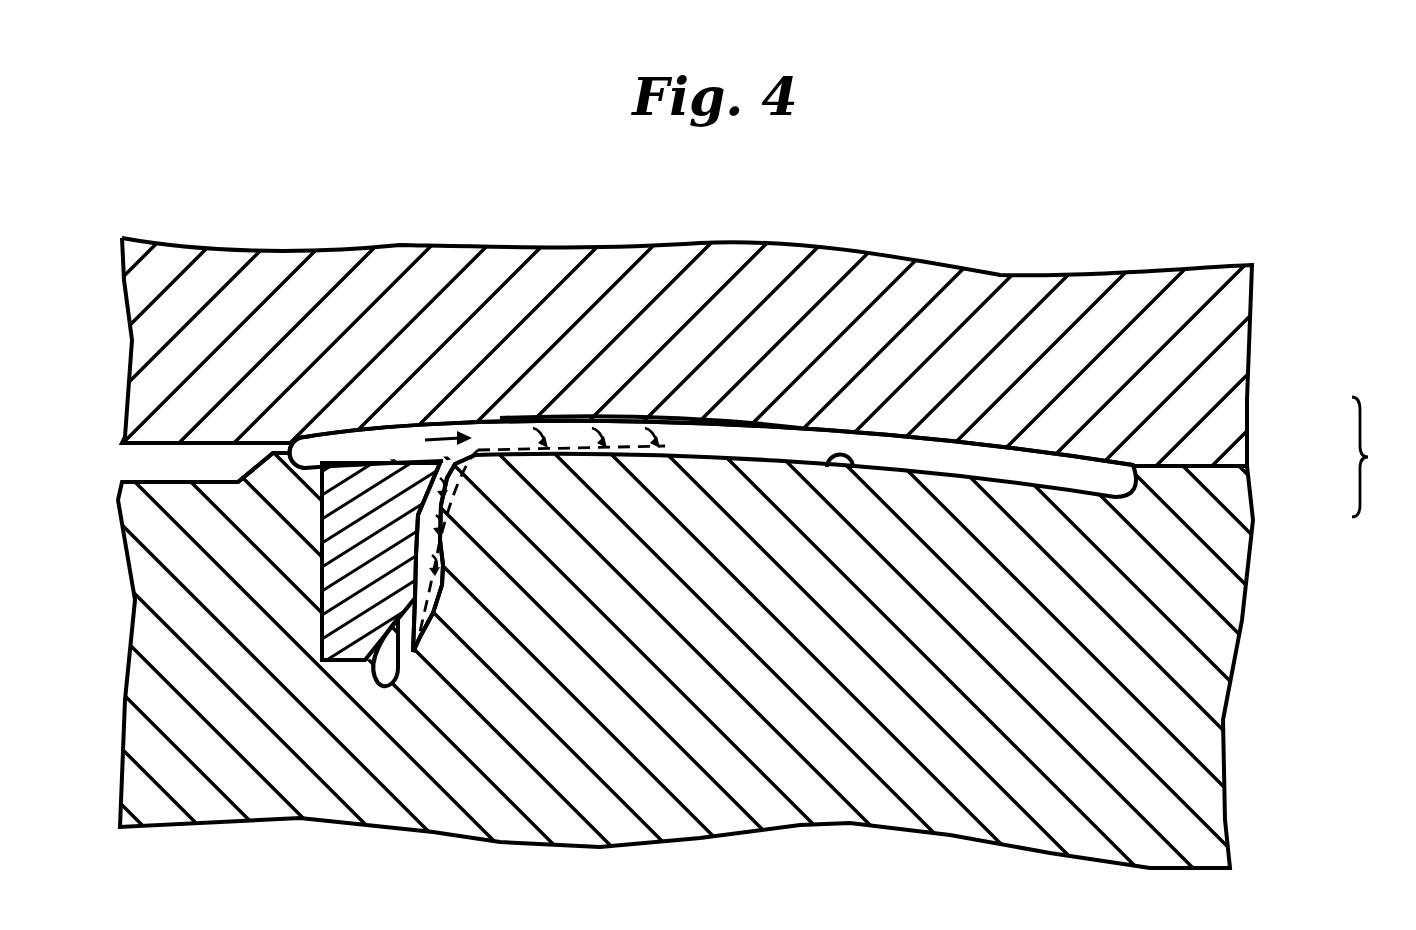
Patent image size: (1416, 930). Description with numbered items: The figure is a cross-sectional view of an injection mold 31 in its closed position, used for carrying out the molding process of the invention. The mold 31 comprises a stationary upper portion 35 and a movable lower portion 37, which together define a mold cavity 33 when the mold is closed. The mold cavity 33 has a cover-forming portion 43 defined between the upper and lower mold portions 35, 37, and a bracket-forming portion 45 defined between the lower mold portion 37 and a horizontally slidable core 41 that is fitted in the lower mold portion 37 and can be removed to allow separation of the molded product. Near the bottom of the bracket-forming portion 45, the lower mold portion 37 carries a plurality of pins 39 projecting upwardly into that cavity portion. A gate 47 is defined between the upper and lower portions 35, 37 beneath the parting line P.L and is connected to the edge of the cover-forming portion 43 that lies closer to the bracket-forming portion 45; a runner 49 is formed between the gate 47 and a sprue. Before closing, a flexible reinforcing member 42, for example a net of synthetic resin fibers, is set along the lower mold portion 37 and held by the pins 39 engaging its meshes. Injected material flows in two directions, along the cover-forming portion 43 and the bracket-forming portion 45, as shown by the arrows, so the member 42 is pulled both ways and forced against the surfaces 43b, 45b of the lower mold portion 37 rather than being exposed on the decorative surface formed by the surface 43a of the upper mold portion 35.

The mold 31 is at (1380, 457).
The mold cavity 33 is at (848, 418).
The stationary upper portion 35 is at (1227, 422).
The movable lower portion 37 is at (1232, 505).
The pins 39 is at (403, 645).
The horizontally slidable core 41 is at (340, 645).
The flexible reinforcing member 42 is at (606, 455).
The cover-forming portion 43 is at (982, 462).
The surface of the upper mold portion 43a is at (700, 410).
The surface of the lower mold portion 43b is at (845, 471).
The bracket-forming portion 45 is at (416, 517).
The surface of the lower mold portion 45b is at (443, 597).
The gate 47 is at (287, 445).
The runner 49 is at (163, 467).
The parting line P.L is at (185, 445).